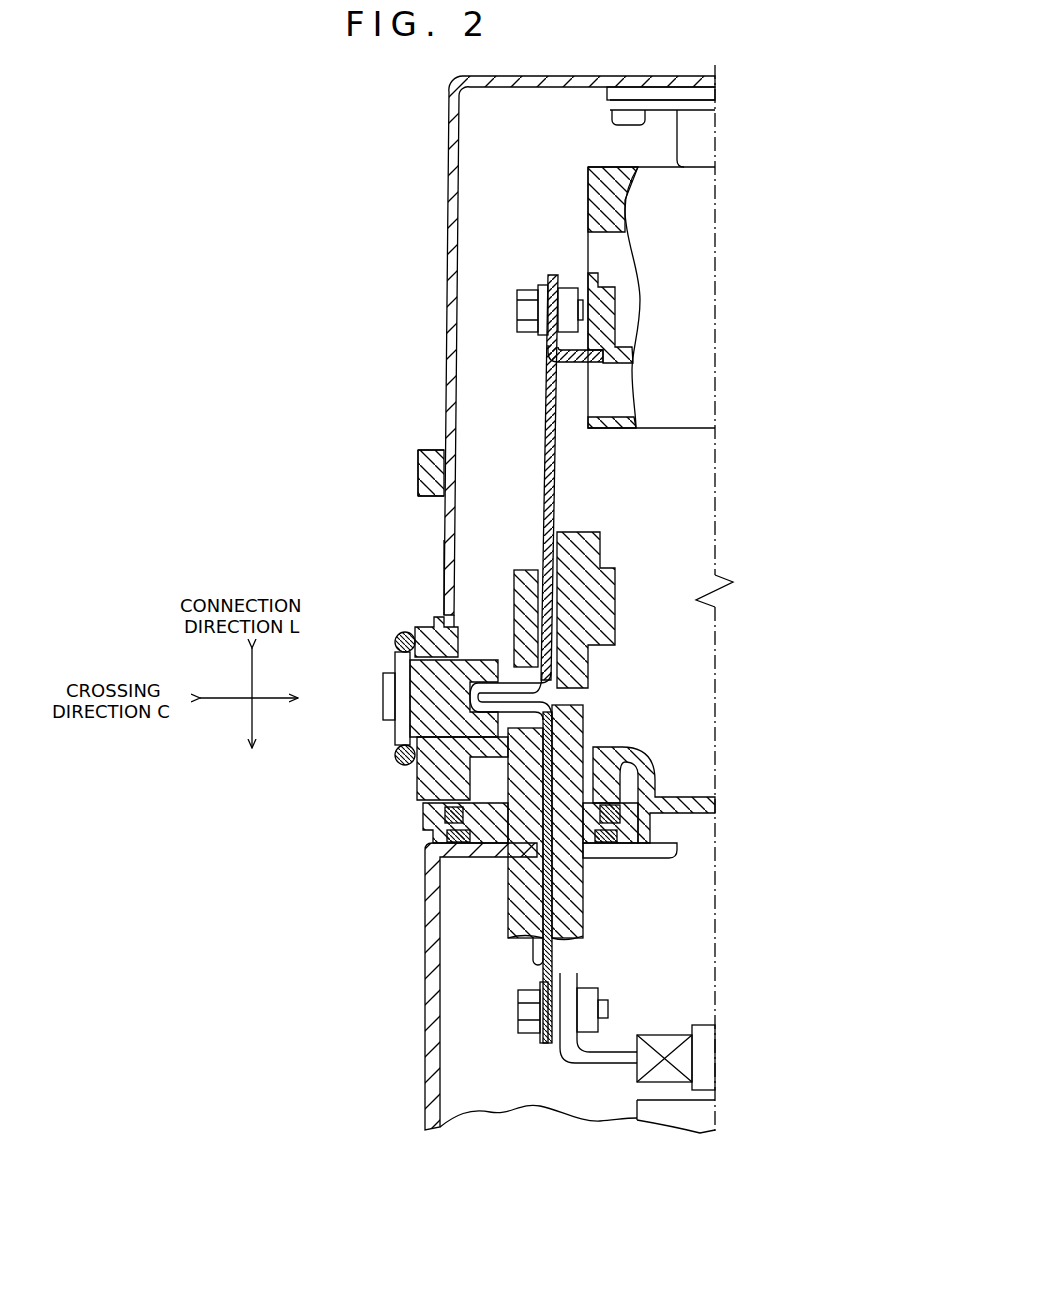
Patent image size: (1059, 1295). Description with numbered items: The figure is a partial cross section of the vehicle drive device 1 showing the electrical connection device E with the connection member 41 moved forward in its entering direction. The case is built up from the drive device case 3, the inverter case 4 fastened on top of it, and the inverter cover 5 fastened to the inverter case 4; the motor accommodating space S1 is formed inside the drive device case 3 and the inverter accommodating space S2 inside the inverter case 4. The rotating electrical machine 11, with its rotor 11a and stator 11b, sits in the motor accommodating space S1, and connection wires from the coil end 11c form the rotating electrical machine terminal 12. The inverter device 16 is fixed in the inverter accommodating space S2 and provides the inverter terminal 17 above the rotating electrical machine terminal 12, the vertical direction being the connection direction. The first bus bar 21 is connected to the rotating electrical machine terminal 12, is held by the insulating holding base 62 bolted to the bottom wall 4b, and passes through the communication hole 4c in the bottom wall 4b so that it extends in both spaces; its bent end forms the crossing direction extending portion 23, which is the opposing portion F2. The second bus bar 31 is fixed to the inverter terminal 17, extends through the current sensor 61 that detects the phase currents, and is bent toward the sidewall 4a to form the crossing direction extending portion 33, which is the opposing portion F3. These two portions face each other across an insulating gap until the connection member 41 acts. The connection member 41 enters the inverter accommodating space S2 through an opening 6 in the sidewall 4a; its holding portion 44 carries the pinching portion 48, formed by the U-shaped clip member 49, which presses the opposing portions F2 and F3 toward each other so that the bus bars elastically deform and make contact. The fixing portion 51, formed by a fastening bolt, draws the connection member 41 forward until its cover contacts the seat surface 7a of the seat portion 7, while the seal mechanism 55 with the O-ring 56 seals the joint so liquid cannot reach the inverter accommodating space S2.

The vehicle drive device 1 is at (282, 212).
The drive device case 3 is at (425, 1000).
The inverter case 4 is at (440, 530).
The sidewall of the inverter case 4a is at (440, 550).
The bottom wall of the inverter case 4b is at (690, 800).
The communication hole 4c is at (498, 790).
The inverter cover 5 is at (444, 294).
The opening 6 is at (443, 715).
The seat portion 7 is at (438, 627).
The seat surface 7a is at (392, 655).
The rotating electrical machine 11 is at (688, 1003).
The rotor 11a is at (710, 1040).
The stator 11b is at (710, 1112).
The device terminal 11c is at (655, 1035).
The rotating electrical machine terminal 12 is at (577, 1064).
The inverter device 16 is at (700, 221).
The inverter terminal 17 is at (552, 280).
The first bus bar 21 is at (537, 973).
The crossing direction extending portion 23 is at (520, 698).
The second bus bar 31 is at (546, 458).
The crossing direction extending portion 33 is at (512, 667).
The connection member 41 is at (410, 725).
The holding portion 44 is at (470, 680).
The pinching portion 48 is at (552, 678).
The clip member 49 is at (552, 678).
The fixing portion 51 is at (386, 717).
The seal mechanism 55 is at (393, 765).
The O-ring 56 is at (398, 634).
The current sensor 61 is at (602, 540).
The holding base 62 is at (522, 850).
The electrical connection device E is at (393, 782).
The opposing portion of the first bus bar F2 is at (632, 707).
The opposing portion of the second bus bar F3 is at (512, 676).
The motor accommodating space S1 is at (687, 907).
The inverter accommodating space S2 is at (690, 646).